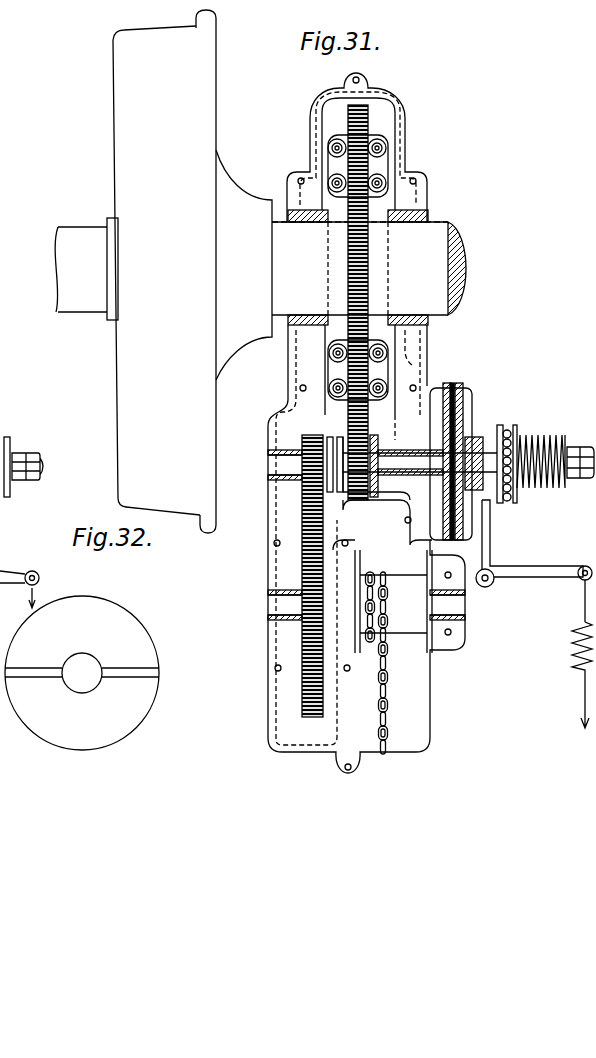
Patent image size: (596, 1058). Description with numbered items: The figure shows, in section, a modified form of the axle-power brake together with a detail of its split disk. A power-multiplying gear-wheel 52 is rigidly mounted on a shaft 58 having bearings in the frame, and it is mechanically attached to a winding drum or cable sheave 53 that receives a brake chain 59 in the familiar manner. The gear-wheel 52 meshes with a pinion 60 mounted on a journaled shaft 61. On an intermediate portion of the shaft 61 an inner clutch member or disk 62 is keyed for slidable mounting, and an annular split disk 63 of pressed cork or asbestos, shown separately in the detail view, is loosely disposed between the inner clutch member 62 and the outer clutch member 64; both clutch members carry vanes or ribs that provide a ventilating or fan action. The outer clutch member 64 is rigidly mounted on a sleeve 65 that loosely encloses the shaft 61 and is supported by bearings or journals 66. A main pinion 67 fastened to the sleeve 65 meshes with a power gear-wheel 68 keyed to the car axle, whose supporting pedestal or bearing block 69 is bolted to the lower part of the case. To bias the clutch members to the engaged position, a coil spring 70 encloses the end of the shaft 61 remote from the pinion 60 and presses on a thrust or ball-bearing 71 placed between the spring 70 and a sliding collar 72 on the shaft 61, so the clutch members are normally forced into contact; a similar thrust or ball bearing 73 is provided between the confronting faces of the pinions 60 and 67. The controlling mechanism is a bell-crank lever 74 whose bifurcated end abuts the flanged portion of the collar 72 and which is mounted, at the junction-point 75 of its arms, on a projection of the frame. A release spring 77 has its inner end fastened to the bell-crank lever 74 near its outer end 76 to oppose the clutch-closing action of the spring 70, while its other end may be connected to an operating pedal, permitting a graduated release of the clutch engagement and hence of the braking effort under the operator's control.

In FIG. 31, the power-multiplying gear-wheel 52 is at (305, 645).
In FIG. 31, the winding drum or cable sheave 53 is at (398, 671).
In FIG. 31, the shaft 58 is at (270, 608).
In FIG. 31, the brake chain 59 is at (387, 713).
In FIG. 31, the pinion 60 is at (307, 487).
In FIG. 31, the shaft 61 is at (272, 463).
In FIG. 31, the inner clutch member or disk 62 is at (466, 405).
In FIG. 31, the annular split disk 63 is at (458, 390).
In FIG. 32, the annular split disk 63 is at (140, 640).
In FIG. 31, the outer clutch member 64 is at (451, 383).
In FIG. 31, the sleeve 65 is at (420, 462).
In FIG. 31, the bearings or journals 66 is at (398, 440).
In FIG. 31, the main pinion 67 is at (350, 437).
In FIG. 31, the power gear-wheel 68 is at (368, 237).
In FIG. 31, the supporting pedestal or bearing block 69 is at (380, 163).
In FIG. 31, the coil spring 70 is at (540, 438).
In FIG. 32, the coil spring 70 is at (4, 437).
In FIG. 31, the thrust or ball-bearing 71 is at (510, 432).
In FIG. 31, the sliding collar 72 is at (478, 437).
In FIG. 31, the thrust or ball bearing 73 is at (337, 472).
In FIG. 31, the bell-crank lever 74 is at (490, 536).
In FIG. 31, the junction-point 75 is at (488, 588).
In FIG. 31, the outer end 76 is at (583, 585).
In FIG. 32, the outer end 76 is at (26, 585).
In FIG. 31, the release spring 77 is at (575, 665).